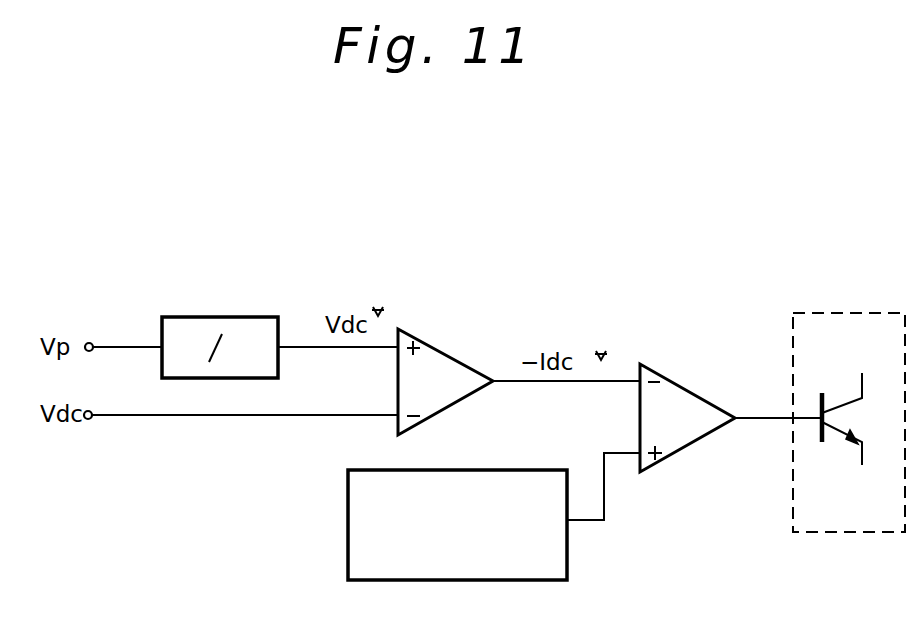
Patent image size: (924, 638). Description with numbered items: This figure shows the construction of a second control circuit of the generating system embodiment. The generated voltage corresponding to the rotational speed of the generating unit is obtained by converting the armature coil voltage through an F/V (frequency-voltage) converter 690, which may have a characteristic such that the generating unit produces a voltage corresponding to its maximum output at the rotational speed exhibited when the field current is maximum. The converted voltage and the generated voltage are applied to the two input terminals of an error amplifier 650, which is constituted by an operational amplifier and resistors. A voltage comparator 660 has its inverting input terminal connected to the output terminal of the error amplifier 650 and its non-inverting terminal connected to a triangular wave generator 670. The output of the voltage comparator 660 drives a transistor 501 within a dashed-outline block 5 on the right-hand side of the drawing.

The F/V converter 690 is at (197, 317).
The error amplifier 650 is at (440, 347).
The voltage comparator 660 is at (656, 375).
The triangular wave generator 670 is at (481, 580).
The transistor 501 is at (840, 395).
The drive circuit 5 is at (833, 313).